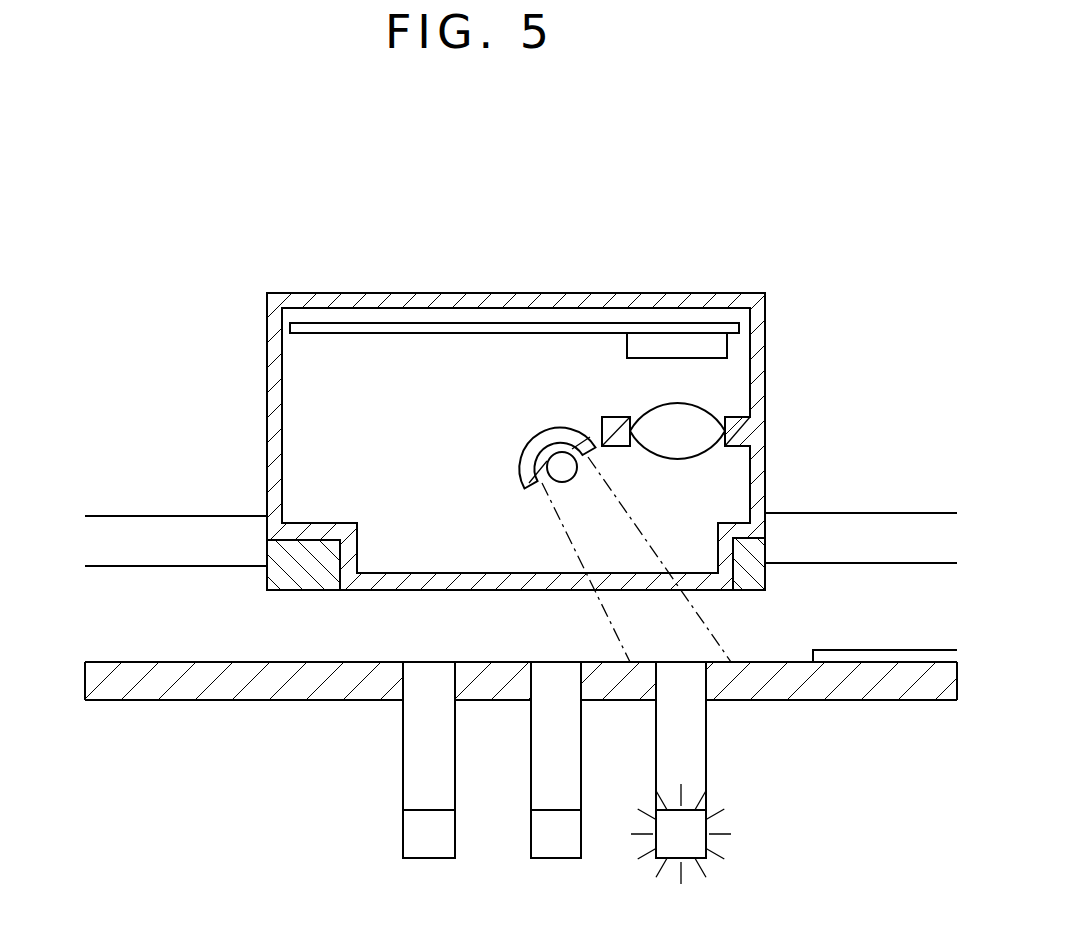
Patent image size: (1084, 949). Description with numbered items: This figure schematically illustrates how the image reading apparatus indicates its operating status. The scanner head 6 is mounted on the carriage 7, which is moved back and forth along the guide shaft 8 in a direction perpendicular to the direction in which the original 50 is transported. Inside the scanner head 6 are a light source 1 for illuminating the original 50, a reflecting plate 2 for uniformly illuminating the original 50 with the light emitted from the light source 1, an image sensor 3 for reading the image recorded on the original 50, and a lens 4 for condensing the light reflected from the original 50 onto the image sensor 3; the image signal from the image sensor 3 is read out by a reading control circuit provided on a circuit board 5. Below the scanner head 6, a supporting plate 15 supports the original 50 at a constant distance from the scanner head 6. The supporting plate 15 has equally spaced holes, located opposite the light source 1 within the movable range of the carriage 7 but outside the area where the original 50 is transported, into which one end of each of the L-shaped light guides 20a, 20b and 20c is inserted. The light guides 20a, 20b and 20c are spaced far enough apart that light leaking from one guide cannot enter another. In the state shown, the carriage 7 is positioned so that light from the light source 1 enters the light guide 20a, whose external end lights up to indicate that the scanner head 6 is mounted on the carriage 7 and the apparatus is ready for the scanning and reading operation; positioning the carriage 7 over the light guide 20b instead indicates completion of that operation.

The light source 1 is at (567, 470).
The reflecting plate 2 is at (548, 440).
The image sensor 3 is at (681, 340).
The lens 4 is at (700, 418).
The circuit board 5 is at (445, 325).
The scanner head 6 is at (267, 328).
The carriage 7 is at (272, 583).
The guide shaft 8 is at (210, 520).
The supporting plate 15 is at (873, 692).
The light guide 20a is at (704, 774).
The light guide 20b is at (542, 800).
The light guide 20c is at (410, 795).
The original 50 is at (845, 652).